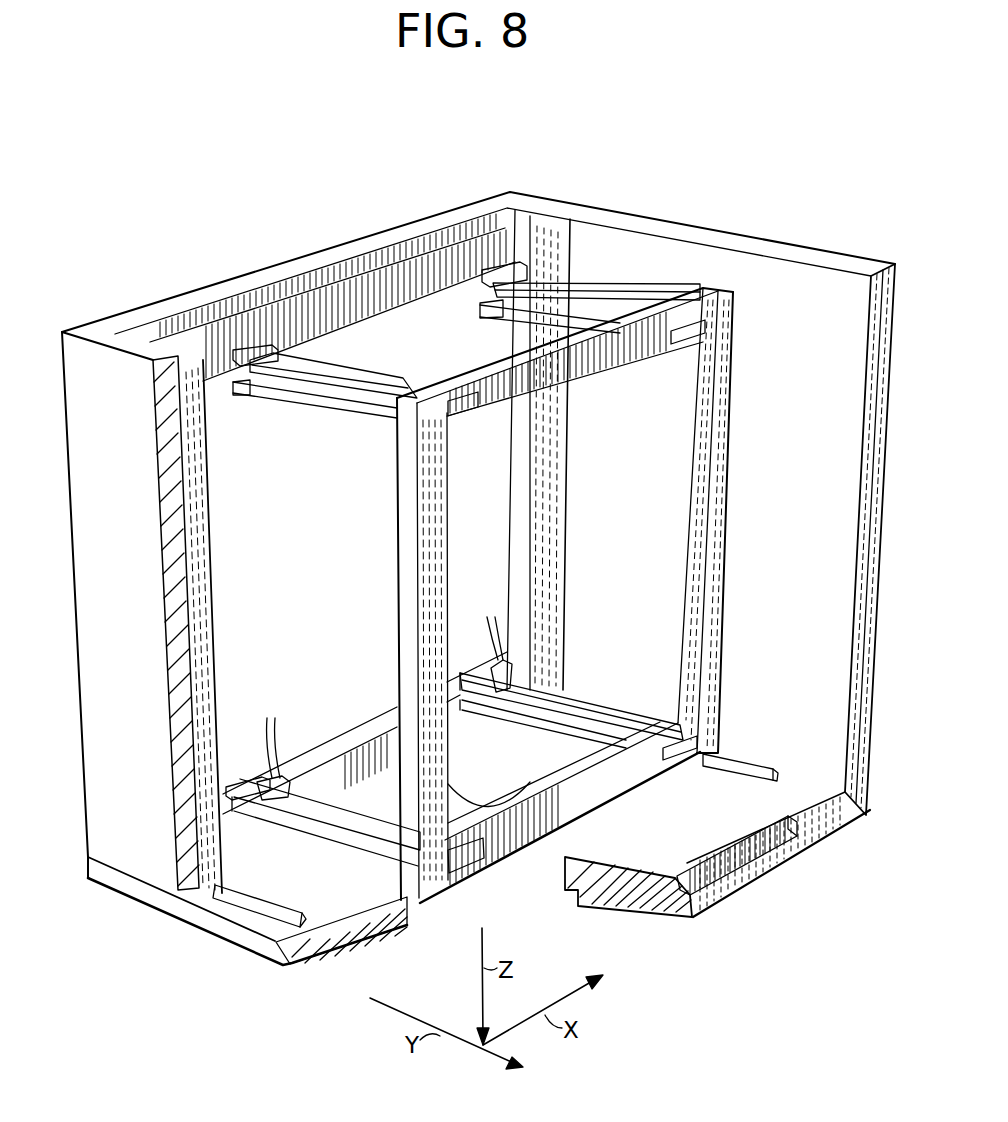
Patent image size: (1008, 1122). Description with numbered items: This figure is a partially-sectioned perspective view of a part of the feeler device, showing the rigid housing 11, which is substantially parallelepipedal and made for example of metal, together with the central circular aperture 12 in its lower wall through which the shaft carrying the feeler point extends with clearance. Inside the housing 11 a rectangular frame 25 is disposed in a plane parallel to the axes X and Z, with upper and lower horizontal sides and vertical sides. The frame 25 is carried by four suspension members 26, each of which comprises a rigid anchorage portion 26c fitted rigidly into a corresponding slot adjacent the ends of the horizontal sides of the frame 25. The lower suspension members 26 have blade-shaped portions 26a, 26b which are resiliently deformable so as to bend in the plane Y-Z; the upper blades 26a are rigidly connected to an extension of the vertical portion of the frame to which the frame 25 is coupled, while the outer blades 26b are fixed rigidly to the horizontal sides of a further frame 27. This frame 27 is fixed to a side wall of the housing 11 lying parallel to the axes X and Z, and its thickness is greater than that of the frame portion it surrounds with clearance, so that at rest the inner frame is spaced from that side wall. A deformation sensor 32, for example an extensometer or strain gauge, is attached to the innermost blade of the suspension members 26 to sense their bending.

The housing 11 is at (100, 745).
The central circular aperture 12 is at (570, 833).
The rectangular frame 25 is at (717, 470).
The suspension members 26 is at (477, 565).
The blade-shaped portion 26a is at (517, 320).
The outer blade 26b is at (297, 367).
The rigid anchorage portion 26c is at (463, 420).
The frame 27 is at (437, 262).
The deformation sensor 32 is at (510, 667).